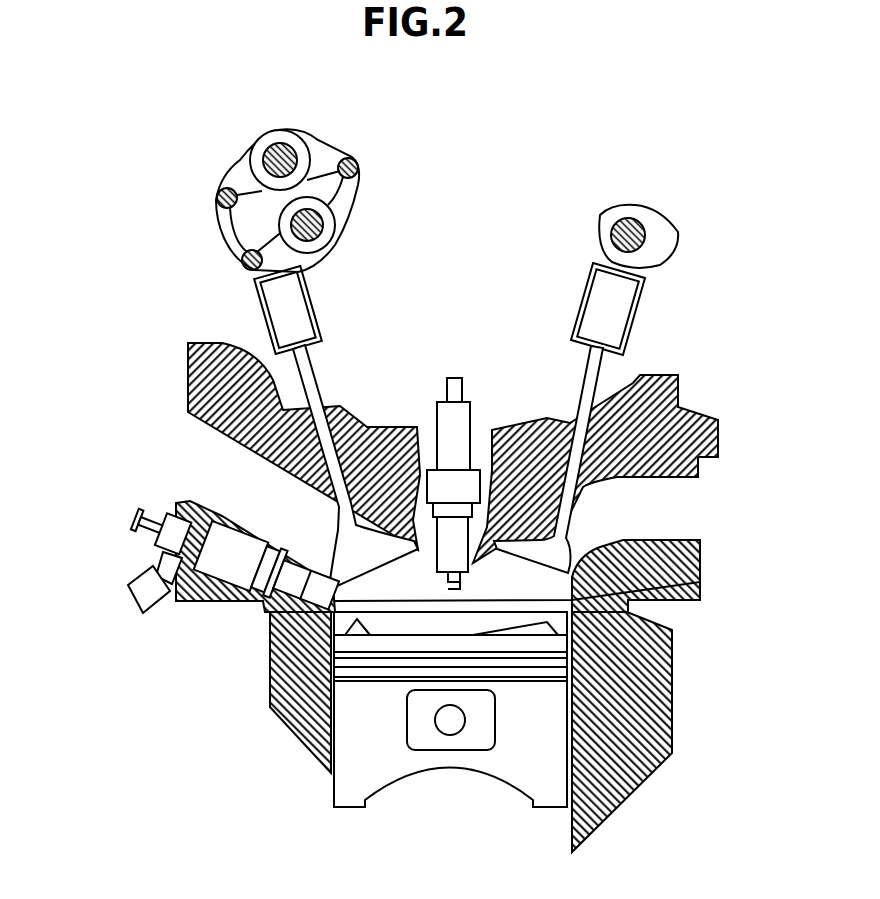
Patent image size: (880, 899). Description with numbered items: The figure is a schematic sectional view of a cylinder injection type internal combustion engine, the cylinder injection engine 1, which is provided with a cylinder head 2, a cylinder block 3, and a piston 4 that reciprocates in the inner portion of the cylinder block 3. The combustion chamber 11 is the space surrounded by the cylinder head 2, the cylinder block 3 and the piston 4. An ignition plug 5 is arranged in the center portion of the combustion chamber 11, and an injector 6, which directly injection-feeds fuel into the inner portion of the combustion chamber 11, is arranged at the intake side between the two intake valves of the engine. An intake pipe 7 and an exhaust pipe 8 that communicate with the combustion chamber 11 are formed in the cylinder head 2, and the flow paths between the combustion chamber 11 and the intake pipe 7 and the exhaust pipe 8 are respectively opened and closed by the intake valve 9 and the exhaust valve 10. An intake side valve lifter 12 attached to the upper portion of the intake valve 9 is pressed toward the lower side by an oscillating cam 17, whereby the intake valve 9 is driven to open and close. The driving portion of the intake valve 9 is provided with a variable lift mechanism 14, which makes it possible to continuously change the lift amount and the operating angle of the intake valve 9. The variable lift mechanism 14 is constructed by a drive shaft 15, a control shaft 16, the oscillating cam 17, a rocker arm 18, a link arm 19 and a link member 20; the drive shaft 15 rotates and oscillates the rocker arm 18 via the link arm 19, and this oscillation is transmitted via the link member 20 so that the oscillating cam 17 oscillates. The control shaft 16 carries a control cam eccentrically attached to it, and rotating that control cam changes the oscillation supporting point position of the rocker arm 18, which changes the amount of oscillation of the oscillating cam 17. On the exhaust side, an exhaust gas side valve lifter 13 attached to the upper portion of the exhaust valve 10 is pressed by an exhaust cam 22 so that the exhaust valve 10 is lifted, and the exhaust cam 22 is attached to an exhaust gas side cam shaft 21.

The cylinder injection engine 1 is at (260, 745).
The cylinder head 2 is at (672, 550).
The cylinder block 3 is at (648, 687).
The piston 4 is at (555, 745).
The ignition plug 5 is at (463, 405).
The injector 6 is at (213, 592).
The intake pipe 7 is at (213, 470).
The exhaust pipe 8 is at (680, 503).
The intake valve 9 is at (289, 427).
The exhaust valve 10 is at (613, 418).
The combustion chamber 11 is at (700, 582).
The intake side valve lifter 12 is at (258, 292).
The exhaust gas side valve lifter 13 is at (645, 305).
The variable lift mechanism 14 is at (243, 192).
The drive shaft 15 is at (320, 238).
The control shaft 16 is at (292, 150).
The oscillating cam 17 is at (285, 258).
The rocker arm 18 is at (240, 178).
The link arm 19 is at (345, 195).
The link member 20 is at (215, 226).
The exhaust gas side cam shaft 21 is at (610, 222).
The exhaust cam 22 is at (642, 217).